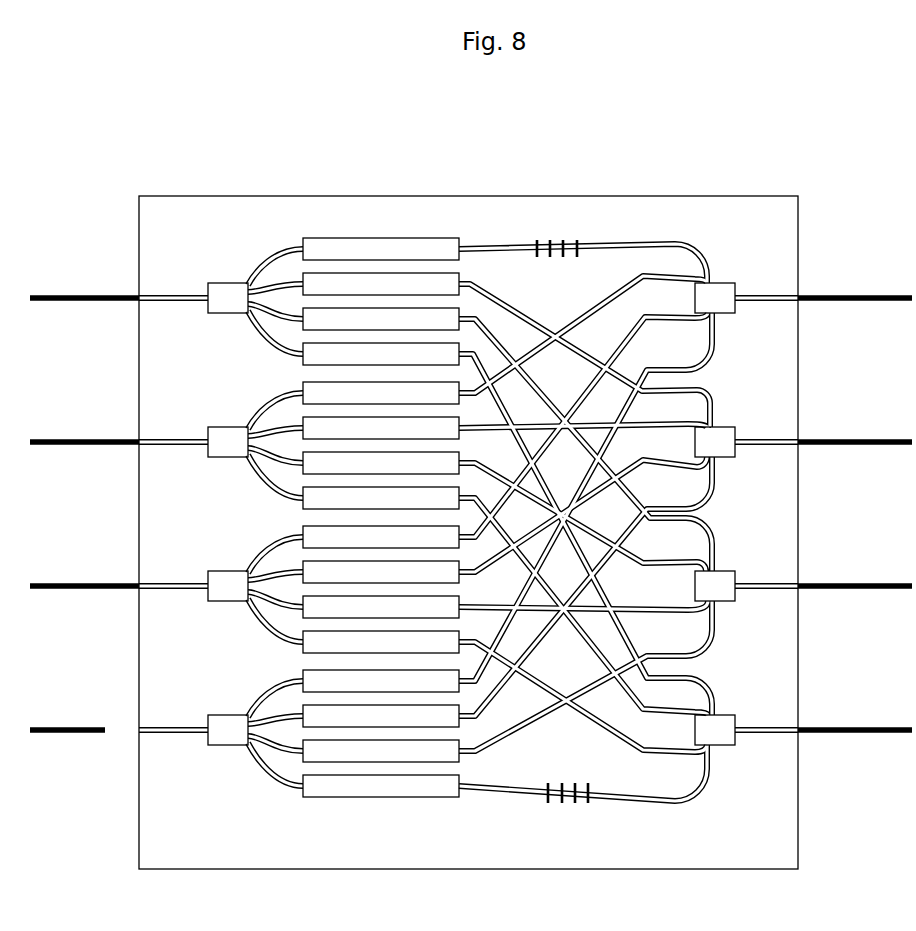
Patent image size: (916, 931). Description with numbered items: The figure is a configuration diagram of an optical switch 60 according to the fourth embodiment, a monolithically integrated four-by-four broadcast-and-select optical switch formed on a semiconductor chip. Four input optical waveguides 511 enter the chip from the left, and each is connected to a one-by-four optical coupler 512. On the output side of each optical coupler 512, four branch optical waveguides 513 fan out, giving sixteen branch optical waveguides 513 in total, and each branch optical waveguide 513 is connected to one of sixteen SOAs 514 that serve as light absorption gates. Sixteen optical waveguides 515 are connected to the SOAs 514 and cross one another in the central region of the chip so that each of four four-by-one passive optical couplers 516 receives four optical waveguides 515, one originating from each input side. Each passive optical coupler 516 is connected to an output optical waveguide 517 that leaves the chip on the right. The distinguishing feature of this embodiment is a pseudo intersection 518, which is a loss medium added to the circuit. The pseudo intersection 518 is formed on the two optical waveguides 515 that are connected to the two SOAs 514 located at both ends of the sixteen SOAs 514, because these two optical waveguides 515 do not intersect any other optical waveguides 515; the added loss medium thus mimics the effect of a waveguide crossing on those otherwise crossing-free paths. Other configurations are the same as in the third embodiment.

The optical switch 60 is at (470, 154).
The input optical waveguide 511 is at (162, 297).
The 1×4 optical coupler 512 is at (222, 302).
The branch optical waveguide 513 is at (258, 262).
The SOA 514 is at (373, 282).
The optical waveguide 515 is at (503, 290).
The 4×1 passive optical coupler 516 is at (720, 292).
The output optical waveguide 517 is at (768, 296).
The pseudo intersection 518 is at (538, 240).